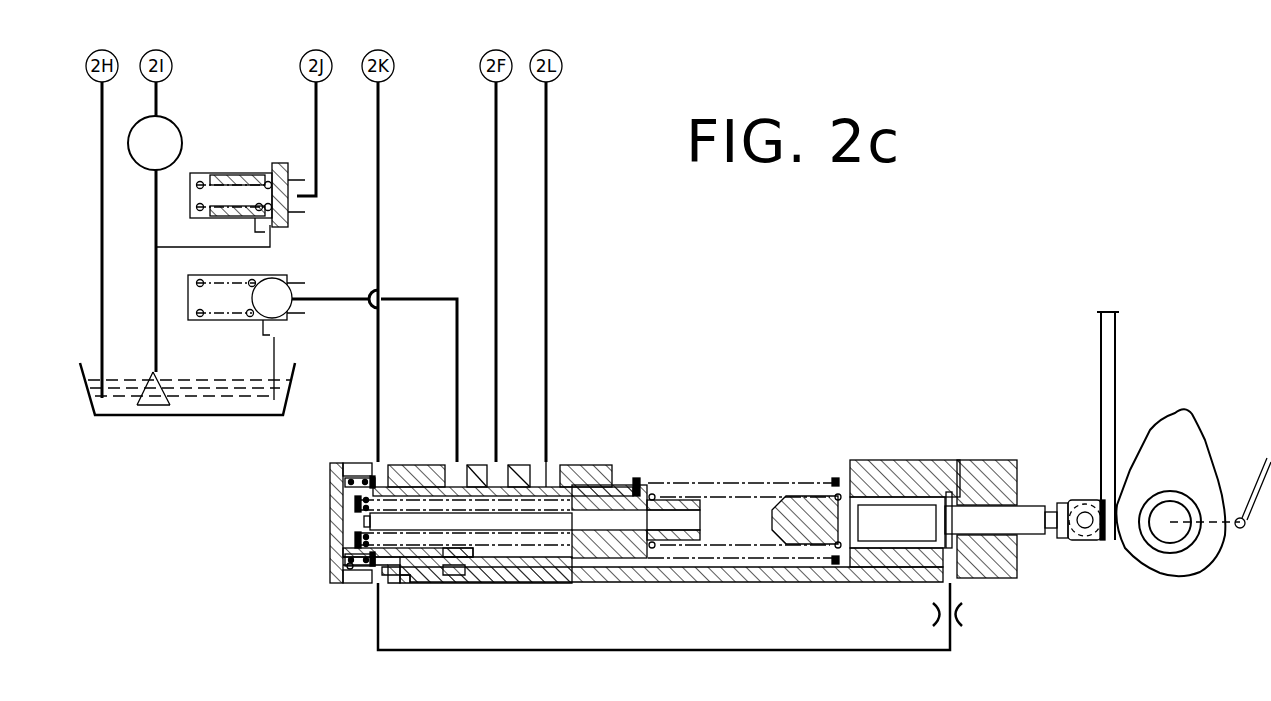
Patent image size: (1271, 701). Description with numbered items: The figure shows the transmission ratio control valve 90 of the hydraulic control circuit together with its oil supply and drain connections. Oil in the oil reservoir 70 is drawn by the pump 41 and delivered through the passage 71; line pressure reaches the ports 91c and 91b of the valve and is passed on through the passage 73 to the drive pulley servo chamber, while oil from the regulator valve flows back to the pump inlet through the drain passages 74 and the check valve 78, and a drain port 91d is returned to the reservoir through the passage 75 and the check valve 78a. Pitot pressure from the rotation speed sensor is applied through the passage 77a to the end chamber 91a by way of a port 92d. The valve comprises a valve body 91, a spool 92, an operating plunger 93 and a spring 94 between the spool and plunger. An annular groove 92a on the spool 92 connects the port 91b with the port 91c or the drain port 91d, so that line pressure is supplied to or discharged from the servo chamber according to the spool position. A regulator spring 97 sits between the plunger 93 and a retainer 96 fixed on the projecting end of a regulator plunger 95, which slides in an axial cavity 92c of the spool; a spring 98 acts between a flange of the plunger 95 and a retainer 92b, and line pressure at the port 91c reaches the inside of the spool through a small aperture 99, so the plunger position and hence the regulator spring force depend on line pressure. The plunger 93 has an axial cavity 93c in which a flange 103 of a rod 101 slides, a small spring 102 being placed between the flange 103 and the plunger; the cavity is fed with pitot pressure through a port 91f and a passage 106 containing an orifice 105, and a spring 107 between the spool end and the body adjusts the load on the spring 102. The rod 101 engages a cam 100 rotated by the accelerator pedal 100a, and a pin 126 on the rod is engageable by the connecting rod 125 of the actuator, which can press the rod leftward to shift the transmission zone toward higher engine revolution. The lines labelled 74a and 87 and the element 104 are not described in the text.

The oil reservoir 70 is at (155, 418).
The passage 71 is at (158, 104).
The pump 41 is at (182, 132).
The passage 73 is at (498, 293).
The drain passages 74 is at (318, 141).
The return line 74a is at (103, 128).
The passage 75 is at (454, 296).
The passage 77a is at (380, 232).
The check valve 78 is at (243, 149).
The check valve 78a is at (195, 331).
The hydraulic line 87 is at (548, 297).
The transmission ratio control valve 90 is at (776, 591).
The valve body 91 is at (598, 477).
The end chamber 91a is at (357, 468).
The port 91b is at (486, 464).
The port 91c is at (556, 466).
The drain port 91d is at (448, 467).
The port 91f is at (385, 583).
The spool 92 is at (595, 548).
The annular groove 92a is at (495, 480).
The retainer 92b is at (347, 500).
The axial cavity 92c is at (427, 556).
The port 92d is at (345, 481).
The operating plunger 93 is at (890, 490).
The axial cavity 93c is at (907, 517).
The spring 94 is at (831, 482).
The regulator plunger 95 is at (493, 523).
The retainer 96 is at (665, 538).
The regulator spring 97 is at (812, 495).
The spring 98 is at (357, 553).
The small aperture 99 is at (564, 482).
The cam 100 is at (1187, 430).
The accelerator pedal 100a is at (1258, 472).
The rod 101 is at (1030, 528).
The small spring 102 is at (855, 520).
The flange 103 is at (967, 502).
The lower block 104 is at (913, 560).
The orifice 105 is at (965, 612).
The passage 106 is at (663, 650).
The spring 107 is at (348, 570).
The connecting rod 125 is at (1140, 352).
The pin 126 is at (1093, 500).